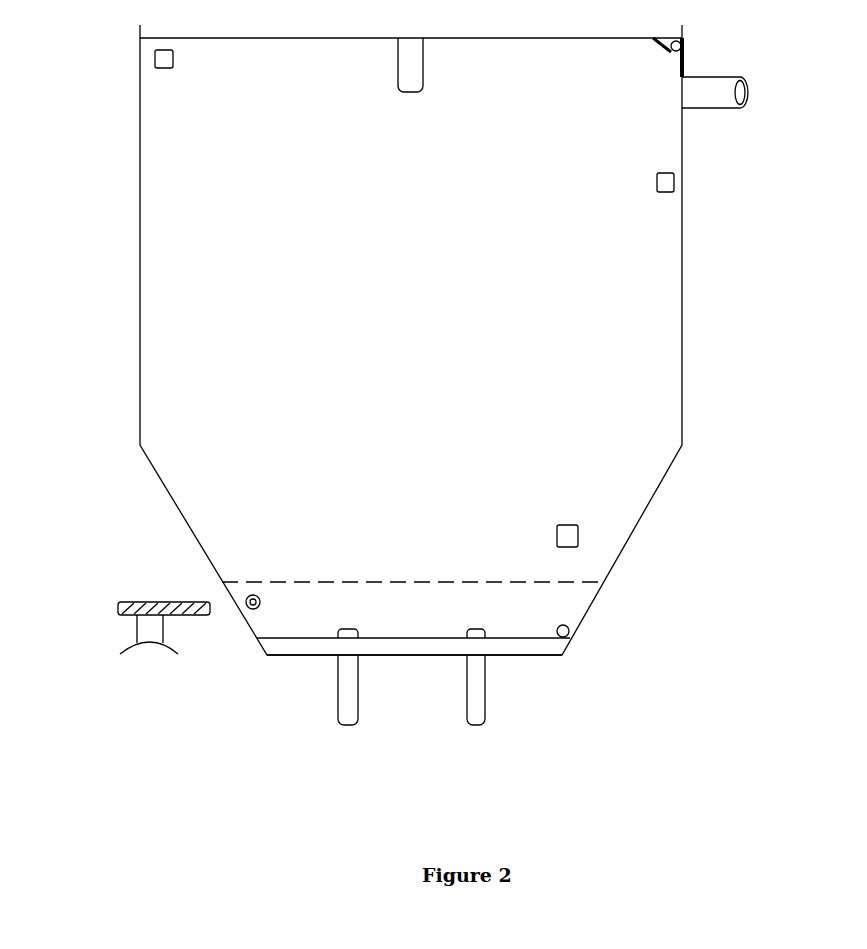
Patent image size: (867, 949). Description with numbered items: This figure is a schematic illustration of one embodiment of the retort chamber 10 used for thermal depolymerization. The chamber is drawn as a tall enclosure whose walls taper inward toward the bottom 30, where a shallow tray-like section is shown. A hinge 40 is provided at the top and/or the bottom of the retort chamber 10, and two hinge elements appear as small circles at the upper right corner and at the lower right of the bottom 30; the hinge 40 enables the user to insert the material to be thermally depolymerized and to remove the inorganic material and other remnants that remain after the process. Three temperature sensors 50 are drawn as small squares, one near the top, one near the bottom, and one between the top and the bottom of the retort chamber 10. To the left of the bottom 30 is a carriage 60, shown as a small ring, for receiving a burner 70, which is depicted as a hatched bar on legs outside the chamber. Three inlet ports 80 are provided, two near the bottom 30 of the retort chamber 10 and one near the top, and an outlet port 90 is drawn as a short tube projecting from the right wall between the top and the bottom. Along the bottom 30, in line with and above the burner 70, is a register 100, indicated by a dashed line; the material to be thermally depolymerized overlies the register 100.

The retort chamber 10 is at (115, 210).
The bottom 30 is at (525, 663).
The hinge 40 is at (655, 60).
The temperature sensors 50 is at (192, 63).
The carriage 60 is at (262, 575).
The burner 70 is at (112, 632).
The inlet port 80 is at (333, 710).
The outlet port 90 is at (760, 117).
The register 100 is at (386, 563).